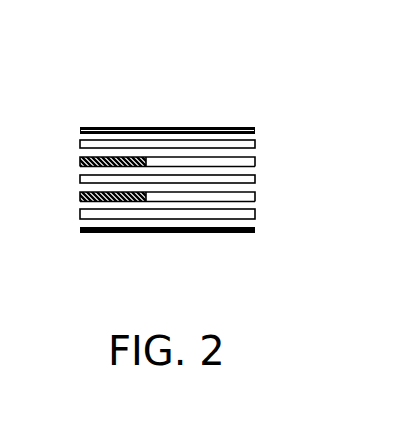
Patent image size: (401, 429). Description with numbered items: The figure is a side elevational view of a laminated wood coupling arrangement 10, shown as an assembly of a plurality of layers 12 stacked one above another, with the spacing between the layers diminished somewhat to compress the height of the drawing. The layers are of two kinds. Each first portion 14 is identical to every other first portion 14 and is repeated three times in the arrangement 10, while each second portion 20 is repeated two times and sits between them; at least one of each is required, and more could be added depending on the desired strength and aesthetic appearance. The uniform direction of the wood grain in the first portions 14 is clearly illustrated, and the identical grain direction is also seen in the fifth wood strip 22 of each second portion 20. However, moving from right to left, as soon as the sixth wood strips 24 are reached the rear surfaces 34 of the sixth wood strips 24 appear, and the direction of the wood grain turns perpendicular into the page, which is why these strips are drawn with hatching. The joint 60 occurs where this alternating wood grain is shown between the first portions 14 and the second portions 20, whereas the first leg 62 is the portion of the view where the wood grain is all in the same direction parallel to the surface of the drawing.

The laminated wood coupling arrangement 10 is at (190, 72).
The plurality of layers 12 is at (220, 121).
The first portion 14 is at (181, 174).
The second portion 20 is at (180, 177).
The fifth wood strip 22 is at (257, 171).
The sixth wood strip 24 is at (81, 159).
The rear surface 34 is at (82, 193).
The joint 60 is at (116, 240).
The first leg 62 is at (223, 240).